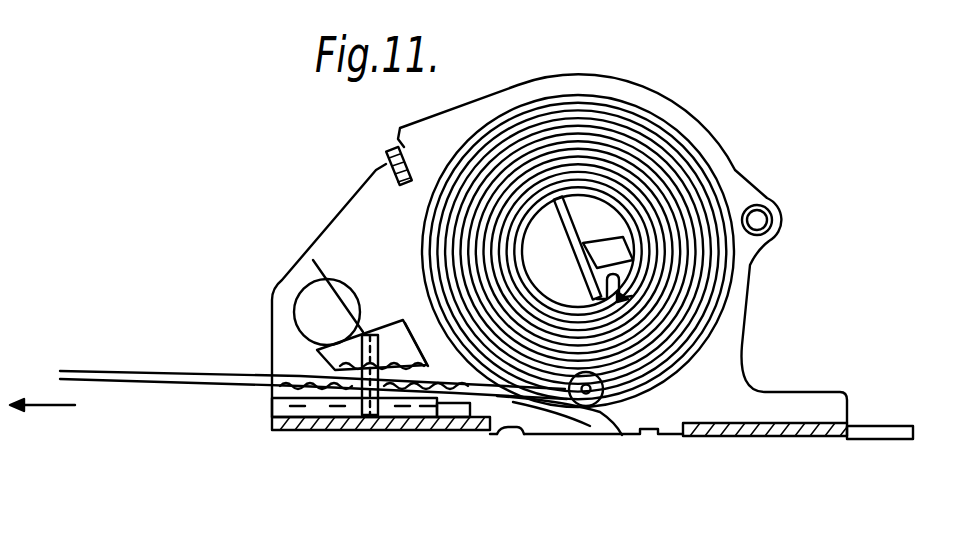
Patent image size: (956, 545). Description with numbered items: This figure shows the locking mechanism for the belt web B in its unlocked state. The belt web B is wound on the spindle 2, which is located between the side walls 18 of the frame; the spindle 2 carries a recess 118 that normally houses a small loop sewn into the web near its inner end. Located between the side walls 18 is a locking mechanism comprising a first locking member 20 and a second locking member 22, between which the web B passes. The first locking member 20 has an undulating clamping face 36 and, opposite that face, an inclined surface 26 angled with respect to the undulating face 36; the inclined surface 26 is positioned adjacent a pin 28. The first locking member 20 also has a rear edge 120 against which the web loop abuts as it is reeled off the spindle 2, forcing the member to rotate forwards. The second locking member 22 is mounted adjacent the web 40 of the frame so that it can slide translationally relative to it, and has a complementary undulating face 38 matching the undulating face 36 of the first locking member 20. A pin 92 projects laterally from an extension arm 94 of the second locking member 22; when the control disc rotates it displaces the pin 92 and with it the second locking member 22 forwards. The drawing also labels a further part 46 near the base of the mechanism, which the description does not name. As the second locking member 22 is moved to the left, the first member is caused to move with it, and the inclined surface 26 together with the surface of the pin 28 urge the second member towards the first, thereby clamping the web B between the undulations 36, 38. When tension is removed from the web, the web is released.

The spindle 2 is at (540, 226).
The recess 118 is at (598, 232).
The belt web B is at (603, 270).
The side walls 18 is at (350, 203).
The inclined surface 26 is at (340, 300).
The pin 28 is at (313, 312).
The first locking member 20 is at (320, 352).
The rear edge 120 is at (430, 328).
The undulating clamping face 36 is at (341, 430).
The complementary undulating face 38 is at (373, 425).
The second locking member 22 is at (428, 432).
The base projection 46 is at (494, 436).
The extension arm 94 is at (557, 424).
The pin 92 is at (617, 430).
The web of the frame 40 is at (272, 398).